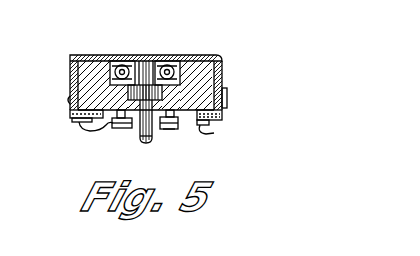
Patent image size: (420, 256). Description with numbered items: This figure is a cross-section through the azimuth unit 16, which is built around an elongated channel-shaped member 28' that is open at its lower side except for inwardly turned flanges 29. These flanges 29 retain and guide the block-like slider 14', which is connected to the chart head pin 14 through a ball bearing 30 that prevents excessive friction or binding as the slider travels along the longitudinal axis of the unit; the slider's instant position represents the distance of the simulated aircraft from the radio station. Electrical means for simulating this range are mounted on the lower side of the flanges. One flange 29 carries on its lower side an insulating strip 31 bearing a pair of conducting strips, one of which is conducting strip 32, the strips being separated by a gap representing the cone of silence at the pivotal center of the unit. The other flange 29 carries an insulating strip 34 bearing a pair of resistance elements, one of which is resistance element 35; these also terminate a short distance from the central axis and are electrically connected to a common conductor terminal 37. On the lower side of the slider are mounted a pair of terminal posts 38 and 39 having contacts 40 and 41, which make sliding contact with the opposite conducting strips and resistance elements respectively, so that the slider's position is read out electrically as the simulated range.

The azimuth unit 16 is at (91, 51).
The chart head pin 14 is at (122, 59).
The slider 14' is at (187, 54).
The ball bearing 30 is at (152, 62).
The channel-shaped member 28' is at (236, 79).
The common conductor terminal 37 is at (227, 94).
The insulating strip 34 is at (222, 114).
The resistance element 35 is at (222, 119).
The contact 41 is at (214, 134).
The inwardly turned flanges 29 is at (114, 129).
The terminal post 39 is at (167, 130).
The terminal post 38 is at (147, 143).
The contact 40 is at (83, 131).
The insulating strip 31 is at (70, 114).
The conducting strip 32 is at (69, 100).